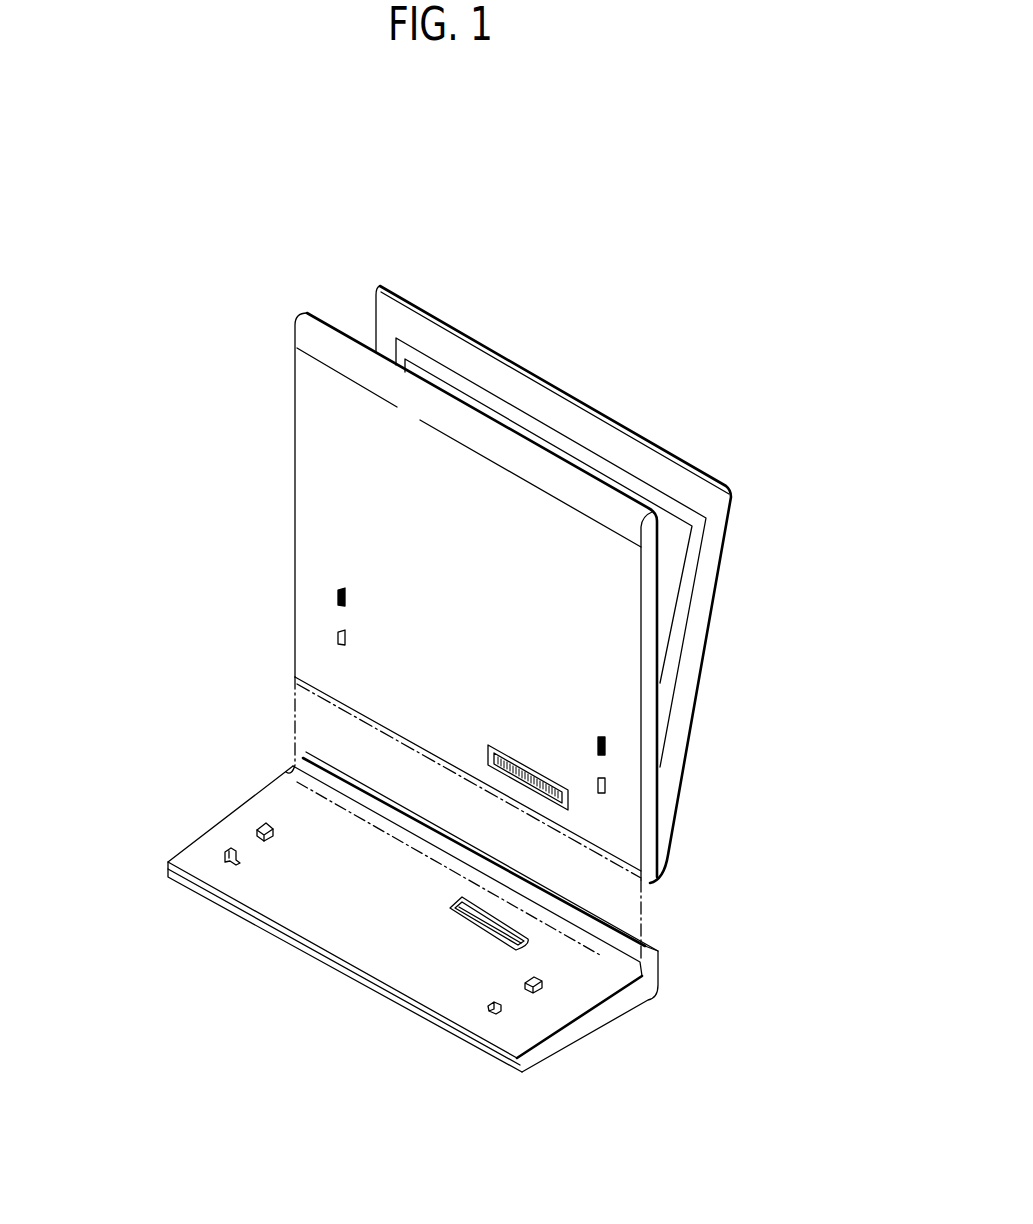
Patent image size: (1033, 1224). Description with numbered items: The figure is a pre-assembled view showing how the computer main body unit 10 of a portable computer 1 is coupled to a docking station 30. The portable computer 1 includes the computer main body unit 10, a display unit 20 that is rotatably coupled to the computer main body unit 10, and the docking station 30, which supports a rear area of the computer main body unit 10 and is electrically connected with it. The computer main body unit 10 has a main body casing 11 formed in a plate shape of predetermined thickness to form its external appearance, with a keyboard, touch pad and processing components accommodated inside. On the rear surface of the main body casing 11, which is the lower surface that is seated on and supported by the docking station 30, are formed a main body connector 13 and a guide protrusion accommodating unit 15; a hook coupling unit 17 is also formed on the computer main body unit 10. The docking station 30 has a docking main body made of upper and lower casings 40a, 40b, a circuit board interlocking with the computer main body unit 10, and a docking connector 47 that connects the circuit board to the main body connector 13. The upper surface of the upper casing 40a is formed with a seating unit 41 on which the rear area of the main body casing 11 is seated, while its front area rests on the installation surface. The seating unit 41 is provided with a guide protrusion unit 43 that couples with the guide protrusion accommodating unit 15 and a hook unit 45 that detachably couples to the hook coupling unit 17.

The portable computer 1 is at (592, 349).
The computer main body unit 10 is at (223, 481).
The main body casing 11 is at (300, 483).
The main body connector 13 is at (490, 758).
The guide protrusion accommodating unit 15 is at (338, 640).
The hook coupling unit 17 is at (338, 600).
The display unit 20 is at (731, 512).
The docking station 30 is at (680, 990).
The upper casing 40a is at (167, 864).
The lower casing 40b is at (167, 870).
The seating unit 41 is at (358, 930).
The guide protrusion unit 43 is at (540, 993).
The hook unit 45 is at (493, 1010).
The docking connector 47 is at (477, 917).